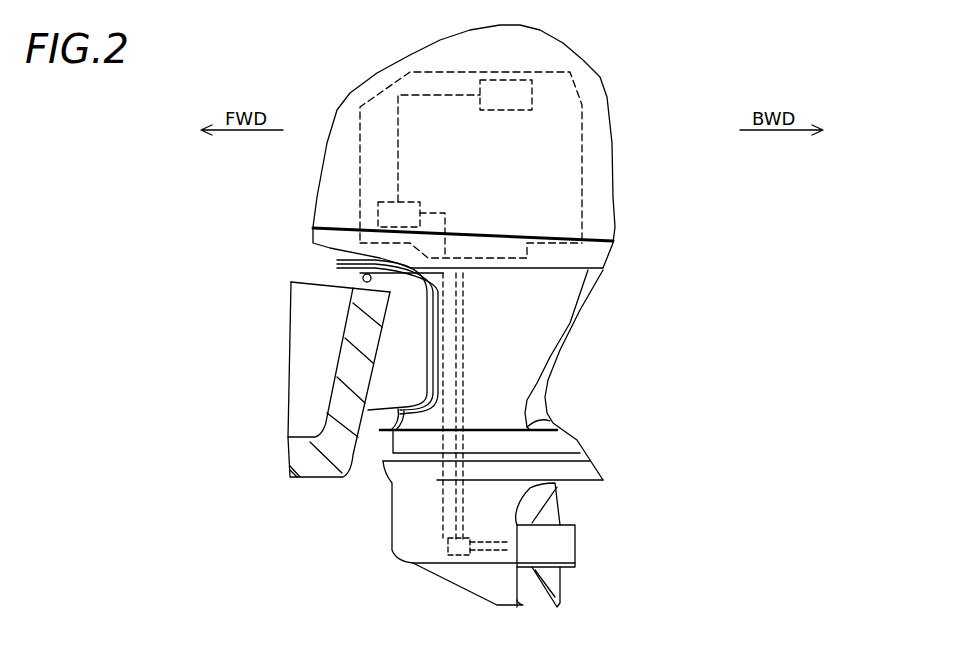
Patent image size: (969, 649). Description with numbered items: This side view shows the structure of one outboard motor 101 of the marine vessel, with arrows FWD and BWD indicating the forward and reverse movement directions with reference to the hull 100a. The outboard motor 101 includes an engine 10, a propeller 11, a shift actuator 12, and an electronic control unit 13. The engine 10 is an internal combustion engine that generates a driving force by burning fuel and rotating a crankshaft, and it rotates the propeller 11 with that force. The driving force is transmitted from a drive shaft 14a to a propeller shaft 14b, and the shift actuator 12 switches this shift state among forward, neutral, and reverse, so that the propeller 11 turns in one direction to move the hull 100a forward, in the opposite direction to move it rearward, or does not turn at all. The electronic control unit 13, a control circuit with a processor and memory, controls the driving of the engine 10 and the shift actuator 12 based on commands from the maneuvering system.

The outboard motor 101 is at (665, 76).
The engine 10 is at (587, 185).
The propeller 11 is at (560, 513).
The shift actuator 12 is at (410, 198).
The electronic control unit (ECU) 13 is at (498, 112).
The drive shaft 14a is at (467, 335).
The propeller shaft 14b is at (485, 556).
The hull 100a is at (295, 447).